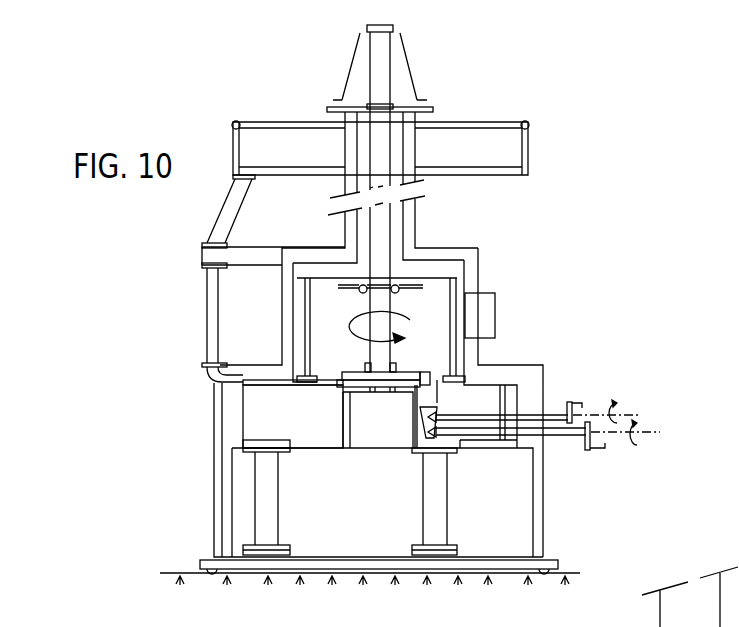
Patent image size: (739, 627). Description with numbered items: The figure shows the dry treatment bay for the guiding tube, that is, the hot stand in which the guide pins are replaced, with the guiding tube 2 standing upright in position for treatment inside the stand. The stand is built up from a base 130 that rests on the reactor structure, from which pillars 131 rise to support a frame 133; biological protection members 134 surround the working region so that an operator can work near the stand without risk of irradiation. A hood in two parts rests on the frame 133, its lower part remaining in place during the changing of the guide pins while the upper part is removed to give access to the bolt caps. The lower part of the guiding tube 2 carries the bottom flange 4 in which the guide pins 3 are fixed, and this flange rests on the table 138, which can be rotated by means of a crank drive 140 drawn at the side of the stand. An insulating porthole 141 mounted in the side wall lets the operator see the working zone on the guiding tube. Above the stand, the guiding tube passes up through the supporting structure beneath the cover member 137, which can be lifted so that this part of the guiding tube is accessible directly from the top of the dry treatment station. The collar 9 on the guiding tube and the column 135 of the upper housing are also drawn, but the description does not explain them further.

The guiding tube 2 is at (382, 220).
The guide pins 3 is at (395, 379).
The bottom flange 4 is at (370, 363).
The collar 9 is at (382, 100).
The base 130 is at (522, 560).
The pillars 131 is at (267, 483).
The frame 133 is at (257, 420).
The biological protection members 134 is at (530, 375).
The column 135 is at (410, 238).
The cover member 137 is at (413, 70).
The table 138 is at (360, 386).
The crank drive 140 is at (550, 415).
The insulating porthole 141 is at (490, 318).